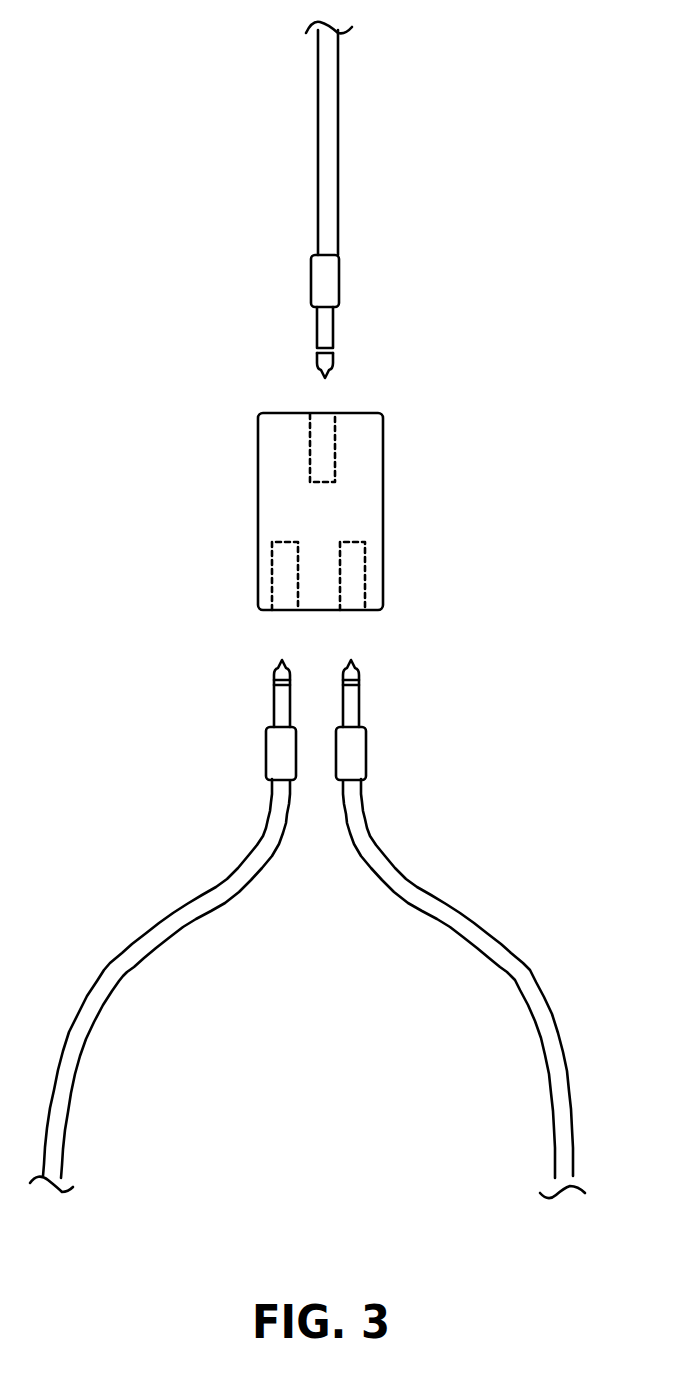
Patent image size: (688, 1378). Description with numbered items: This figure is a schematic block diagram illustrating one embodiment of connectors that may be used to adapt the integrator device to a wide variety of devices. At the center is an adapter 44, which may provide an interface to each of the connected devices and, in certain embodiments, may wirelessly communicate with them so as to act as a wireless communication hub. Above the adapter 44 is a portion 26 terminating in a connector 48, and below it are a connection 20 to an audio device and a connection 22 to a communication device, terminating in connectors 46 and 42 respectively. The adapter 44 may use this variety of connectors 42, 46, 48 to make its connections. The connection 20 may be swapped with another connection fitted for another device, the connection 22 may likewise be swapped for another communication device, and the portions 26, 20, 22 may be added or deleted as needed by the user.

The connection 20 is at (113, 977).
The connection 22 is at (545, 1055).
The portion 26 is at (338, 112).
The connector 42 is at (358, 750).
The adapter 44 is at (370, 502).
The connector 46 is at (272, 751).
The connector 48 is at (333, 288).